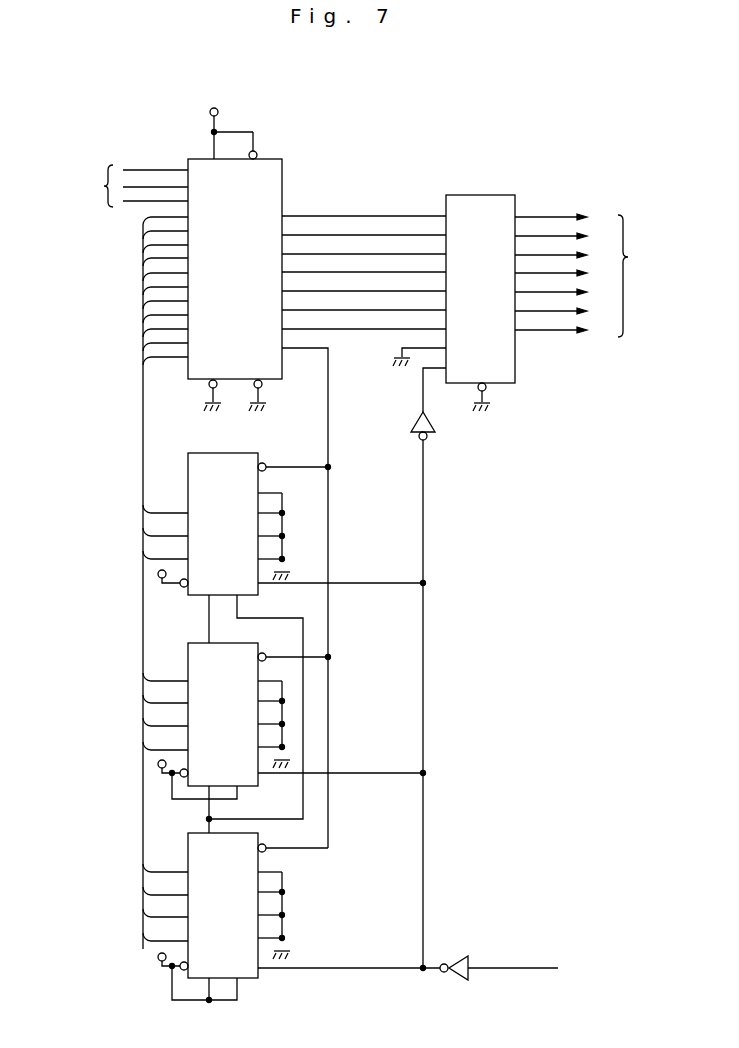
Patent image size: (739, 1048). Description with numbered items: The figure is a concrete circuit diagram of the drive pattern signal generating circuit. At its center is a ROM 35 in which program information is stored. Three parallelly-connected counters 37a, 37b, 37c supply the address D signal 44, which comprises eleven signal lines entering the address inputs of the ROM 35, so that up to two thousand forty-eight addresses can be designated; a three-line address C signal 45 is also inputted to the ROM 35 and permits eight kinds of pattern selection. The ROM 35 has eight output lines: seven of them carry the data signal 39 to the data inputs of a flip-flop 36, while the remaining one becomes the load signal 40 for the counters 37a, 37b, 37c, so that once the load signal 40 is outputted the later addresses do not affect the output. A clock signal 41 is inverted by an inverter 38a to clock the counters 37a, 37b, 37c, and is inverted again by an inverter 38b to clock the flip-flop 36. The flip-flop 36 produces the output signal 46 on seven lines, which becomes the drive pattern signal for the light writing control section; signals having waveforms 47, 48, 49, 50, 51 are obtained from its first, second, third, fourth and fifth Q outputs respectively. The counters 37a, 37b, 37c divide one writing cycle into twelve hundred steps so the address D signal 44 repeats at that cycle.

The ROM 35 is at (282, 175).
The flip-flop 36 is at (493, 195).
The counter 37a is at (188, 470).
The counter 37b is at (188, 651).
The counter 37c is at (188, 851).
The inverter 38a is at (459, 956).
The inverter 38b is at (433, 424).
The data signal 39 is at (372, 215).
The load signal 40 is at (328, 425).
The clock signal 41 is at (533, 968).
The address D signal 44 is at (143, 300).
The address C signal 45 is at (103, 186).
The output signal 46 is at (632, 258).
The waveform 47 is at (564, 218).
The waveform 48 is at (564, 237).
The waveform 49 is at (564, 256).
The waveform 50 is at (564, 275).
The waveform 51 is at (564, 294).